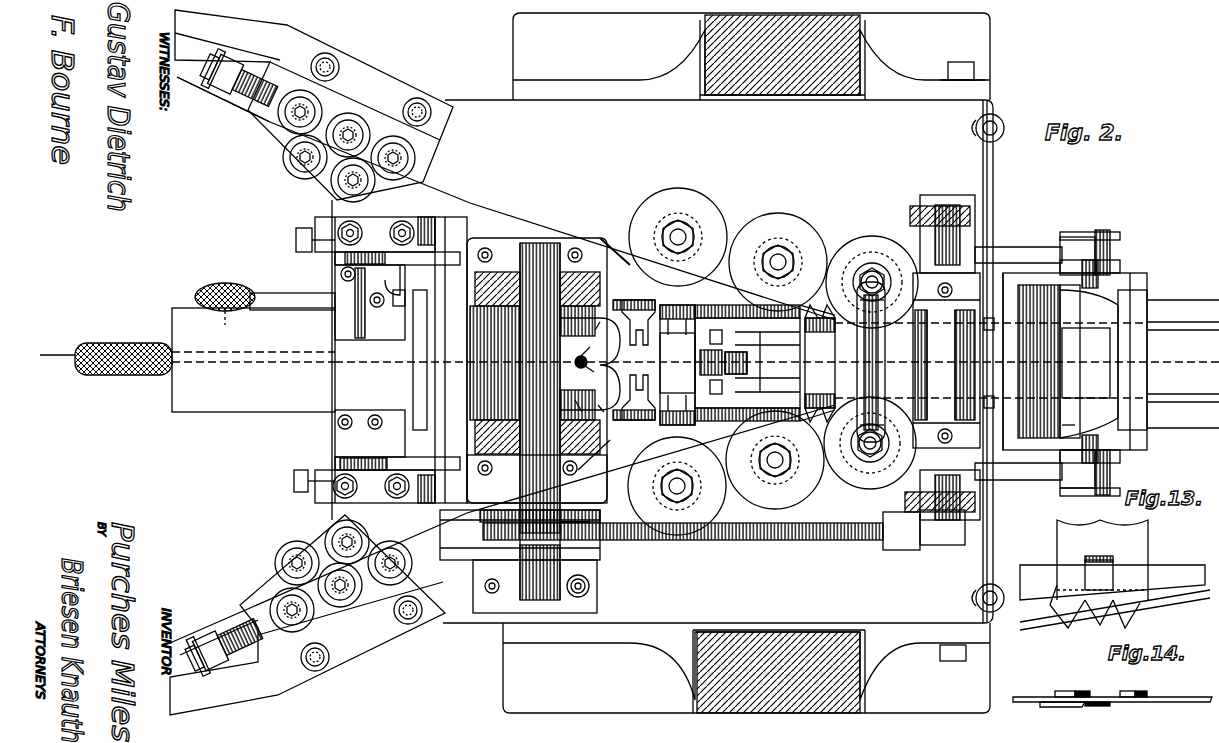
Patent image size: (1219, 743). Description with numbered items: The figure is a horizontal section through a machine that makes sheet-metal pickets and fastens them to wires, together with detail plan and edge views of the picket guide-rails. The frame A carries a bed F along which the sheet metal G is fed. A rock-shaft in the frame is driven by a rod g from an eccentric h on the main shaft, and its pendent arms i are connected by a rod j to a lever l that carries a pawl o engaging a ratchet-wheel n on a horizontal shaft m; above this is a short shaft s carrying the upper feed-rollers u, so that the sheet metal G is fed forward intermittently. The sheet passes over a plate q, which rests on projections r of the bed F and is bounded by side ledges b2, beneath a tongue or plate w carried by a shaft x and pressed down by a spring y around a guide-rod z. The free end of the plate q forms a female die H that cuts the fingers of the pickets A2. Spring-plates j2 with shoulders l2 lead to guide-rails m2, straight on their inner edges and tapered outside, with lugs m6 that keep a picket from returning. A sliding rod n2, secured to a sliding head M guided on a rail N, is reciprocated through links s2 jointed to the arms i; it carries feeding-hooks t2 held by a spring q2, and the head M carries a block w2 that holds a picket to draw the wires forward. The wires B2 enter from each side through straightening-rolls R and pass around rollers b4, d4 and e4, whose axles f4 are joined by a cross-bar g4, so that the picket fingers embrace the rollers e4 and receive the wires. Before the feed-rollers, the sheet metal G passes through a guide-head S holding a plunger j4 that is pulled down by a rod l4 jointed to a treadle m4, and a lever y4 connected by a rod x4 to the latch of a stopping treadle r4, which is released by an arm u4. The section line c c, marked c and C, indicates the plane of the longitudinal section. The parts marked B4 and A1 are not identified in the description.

In FIG. 2, the frame A is at (746, 363).
In FIG. 2, the bed F is at (662, 361).
In FIG. 2, the straightening-rolls R is at (311, 362).
In FIG. 2, the upper band B4 is at (506, 198).
In FIG. 2, the arm u4 is at (615, 251).
In FIG. 2, the wire B2 is at (694, 479).
In FIG. 13, the wire B2 is at (1115, 616).
In FIG. 2, the cross-bar g4 is at (596, 455).
In FIG. 2, the roller b4 is at (677, 361).
In FIG. 2, the roller d4 is at (776, 361).
In FIG. 2, the roller e4 is at (871, 362).
In FIG. 2, the axle f4 is at (872, 365).
In FIG. 2, the rod g is at (871, 362).
In FIG. 2, the eccentric h is at (872, 314).
In FIG. 2, the projection r is at (872, 409).
In FIG. 2, the short shaft s is at (540, 421).
In FIG. 2, the shaft x is at (534, 370).
In FIG. 2, the feed-roller u is at (590, 364).
In FIG. 2, the horizontal shaft m is at (569, 429).
In FIG. 2, the spring y is at (587, 348).
In FIG. 2, the guide-rod z is at (592, 373).
In FIG. 2, the plate q is at (581, 402).
In FIG. 2, the ledge b2 is at (601, 359).
In FIG. 2, the tongue w is at (637, 357).
In FIG. 2, the female die H is at (634, 360).
In FIG. 2, the spring-plate j2 is at (677, 356).
In FIG. 2, the die A1 is at (885, 363).
In FIG. 2, the feeding-hook t2 is at (747, 363).
In FIG. 2, the spring q2 is at (736, 363).
In FIG. 2, the rail m2 is at (765, 363).
In FIG. 13, the rail m2 is at (1112, 596).
In FIG. 14, the rail m2 is at (1112, 691).
In FIG. 2, the picket A2 is at (820, 363).
In FIG. 13, the picket A2 is at (1102, 560).
In FIG. 14, the picket A2 is at (1101, 687).
In FIG. 2, the shoulder l2 is at (946, 360).
In FIG. 2, the sliding rod n2 is at (989, 361).
In FIG. 2, the sliding head M is at (1075, 361).
In FIG. 2, the section line c is at (1039, 361).
In FIG. 2, the block w2 is at (1069, 428).
In FIG. 2, the rail N is at (1183, 376).
In FIG. 2, the link s2 is at (1047, 363).
In FIG. 2, the pendent arm i is at (934, 357).
In FIG. 2, the rod j is at (724, 534).
In FIG. 2, the lever l is at (523, 579).
In FIG. 2, the pendent rod l4 is at (578, 575).
In FIG. 2, the pawl o is at (520, 535).
In FIG. 2, the ratchet-wheel n is at (579, 515).
In FIG. 2, the guide-head S is at (377, 360).
In FIG. 2, the rod x4 is at (438, 360).
In FIG. 2, the plunger j4 is at (425, 360).
In FIG. 2, the lever y4 is at (370, 361).
In FIG. 2, the sheet metal G is at (267, 360).
In FIG. 2, the treadle m4 is at (123, 348).
In FIG. 2, the treadle r4 is at (255, 296).
In FIG. 2, the section line C is at (50, 354).
In FIG. 13, the lug m6 is at (1099, 573).
In FIG. 14, the lug m6 is at (1070, 707).